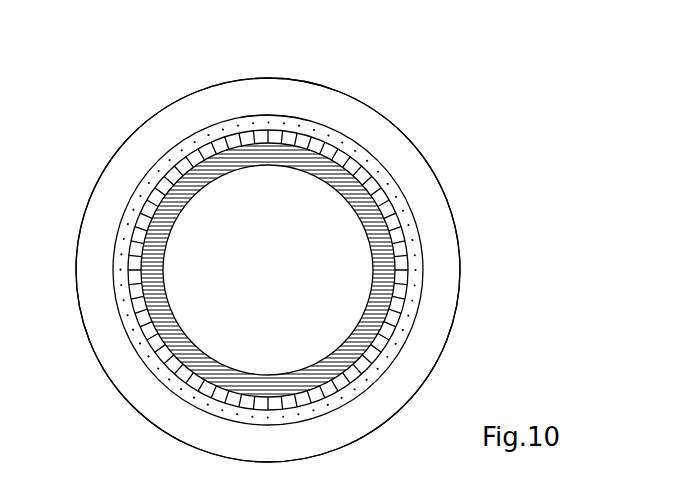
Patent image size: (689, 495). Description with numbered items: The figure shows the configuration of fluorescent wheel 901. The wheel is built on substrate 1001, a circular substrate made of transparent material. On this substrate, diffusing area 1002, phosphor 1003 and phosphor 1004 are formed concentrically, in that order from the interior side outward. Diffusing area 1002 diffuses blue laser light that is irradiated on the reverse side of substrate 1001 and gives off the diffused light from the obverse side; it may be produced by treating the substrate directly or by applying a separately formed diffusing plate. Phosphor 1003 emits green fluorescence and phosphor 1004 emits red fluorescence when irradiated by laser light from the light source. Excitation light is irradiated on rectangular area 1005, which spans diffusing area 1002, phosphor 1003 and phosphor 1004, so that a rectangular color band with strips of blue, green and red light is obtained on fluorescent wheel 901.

The fluorescent wheel 901 is at (361, 65).
The substrate 1001 is at (453, 312).
The diffusing area 1002 is at (143, 264).
The phosphor 1003 is at (162, 202).
The phosphor 1004 is at (121, 232).
The rectangular area 1005 is at (270, 116).